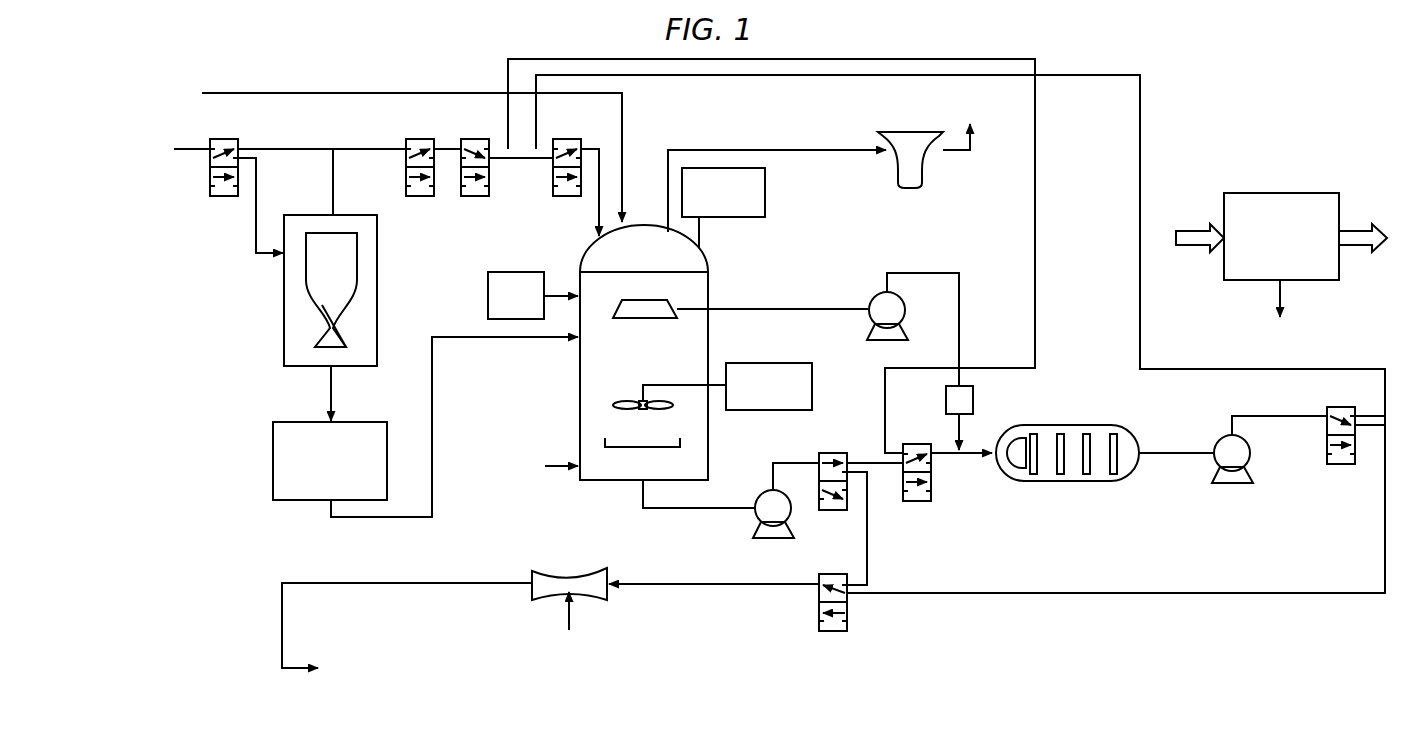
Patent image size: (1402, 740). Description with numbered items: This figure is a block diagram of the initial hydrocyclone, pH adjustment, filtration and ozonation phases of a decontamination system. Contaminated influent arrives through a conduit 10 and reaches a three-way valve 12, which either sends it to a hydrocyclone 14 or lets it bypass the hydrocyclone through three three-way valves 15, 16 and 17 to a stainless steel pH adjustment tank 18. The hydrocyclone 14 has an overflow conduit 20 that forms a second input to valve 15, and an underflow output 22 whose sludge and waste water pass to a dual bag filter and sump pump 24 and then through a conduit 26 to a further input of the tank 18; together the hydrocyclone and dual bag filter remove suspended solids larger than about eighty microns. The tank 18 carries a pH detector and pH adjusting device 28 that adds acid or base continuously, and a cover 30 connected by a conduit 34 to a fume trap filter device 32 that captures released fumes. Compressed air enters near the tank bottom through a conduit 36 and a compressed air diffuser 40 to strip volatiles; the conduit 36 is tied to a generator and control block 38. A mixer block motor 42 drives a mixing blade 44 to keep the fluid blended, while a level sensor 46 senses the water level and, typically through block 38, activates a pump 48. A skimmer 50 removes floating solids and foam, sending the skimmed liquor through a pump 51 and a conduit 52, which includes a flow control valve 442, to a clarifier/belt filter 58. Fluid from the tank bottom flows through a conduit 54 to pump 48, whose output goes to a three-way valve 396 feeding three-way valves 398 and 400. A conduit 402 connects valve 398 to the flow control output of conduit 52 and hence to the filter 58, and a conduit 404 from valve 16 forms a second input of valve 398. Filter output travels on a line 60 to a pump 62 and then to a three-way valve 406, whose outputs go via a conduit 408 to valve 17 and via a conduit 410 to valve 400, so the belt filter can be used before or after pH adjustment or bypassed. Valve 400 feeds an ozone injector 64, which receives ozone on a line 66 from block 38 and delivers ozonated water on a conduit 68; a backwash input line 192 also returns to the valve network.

The conduit 10 is at (192, 154).
The three-way valve 12 is at (222, 199).
The hydrocyclone 14 is at (284, 298).
The three-way valve 15 is at (418, 198).
The three-way valve 16 is at (472, 139).
The three-way valve 17 is at (567, 198).
The pH adjustment tank 18 is at (709, 283).
The conduit 20 is at (333, 166).
The underflow output 22 is at (331, 392).
The dual bag filter and sump pump 24 is at (273, 458).
The conduit 26 is at (432, 405).
The pH detector and pH adjusting device 28 is at (513, 272).
The cover 30 is at (626, 222).
The fume trap filter device 32 is at (886, 164).
The conduit 34 is at (702, 150).
The conduit 36 is at (556, 458).
The generator and control block 38 is at (1300, 193).
The compressed air diffuser 40 is at (655, 447).
The mixer block motor 42 is at (780, 363).
The mixing blade 44 is at (620, 402).
The level sensor 46 is at (766, 198).
The pump 48 is at (758, 496).
The skimmer 50 is at (612, 308).
The pump 51 is at (872, 298).
The conduit 52 is at (960, 312).
The conduit 54 is at (712, 510).
The clarifier/belt filter 58 is at (1078, 425).
The line 60 is at (1172, 452).
The pump 62 is at (1250, 462).
The ozone injector 64 is at (586, 571).
The line 66 is at (570, 618).
The conduit 68 is at (309, 582).
The backwash input line 192 is at (280, 92).
The three-way valve 396 is at (834, 453).
The three-way valve 398 is at (912, 502).
The three-way valve 400 is at (818, 618).
The conduit 402 is at (950, 456).
The conduit 404 is at (1035, 168).
The three-way valve 406 is at (1341, 465).
The conduit 408 is at (1140, 163).
The conduit 410 is at (913, 599).
The flow control valve 442 is at (974, 402).